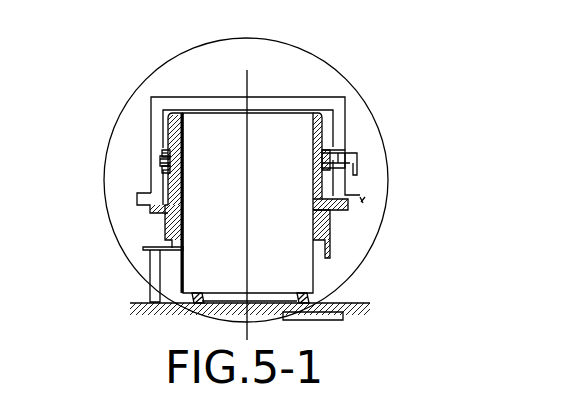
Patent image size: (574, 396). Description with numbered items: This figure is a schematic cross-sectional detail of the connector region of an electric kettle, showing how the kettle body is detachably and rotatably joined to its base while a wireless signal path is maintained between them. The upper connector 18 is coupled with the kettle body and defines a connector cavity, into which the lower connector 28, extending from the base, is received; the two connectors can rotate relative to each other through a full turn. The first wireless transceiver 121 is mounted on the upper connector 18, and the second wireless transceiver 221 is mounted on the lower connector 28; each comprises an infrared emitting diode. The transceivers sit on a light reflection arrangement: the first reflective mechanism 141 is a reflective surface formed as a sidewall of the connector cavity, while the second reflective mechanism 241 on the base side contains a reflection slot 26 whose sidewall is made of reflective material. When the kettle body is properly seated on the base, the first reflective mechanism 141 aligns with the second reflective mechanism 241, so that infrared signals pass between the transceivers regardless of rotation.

The upper connector 18 is at (199, 104).
The first wireless transceiver 121 is at (345, 153).
The reflection slot 26 is at (325, 165).
The lower connector 28 is at (348, 211).
The second reflective mechanism 241 is at (165, 150).
The first reflective mechanism 141 is at (168, 161).
The second wireless transceiver 221 is at (167, 169).